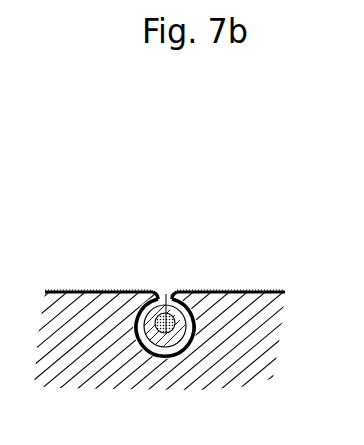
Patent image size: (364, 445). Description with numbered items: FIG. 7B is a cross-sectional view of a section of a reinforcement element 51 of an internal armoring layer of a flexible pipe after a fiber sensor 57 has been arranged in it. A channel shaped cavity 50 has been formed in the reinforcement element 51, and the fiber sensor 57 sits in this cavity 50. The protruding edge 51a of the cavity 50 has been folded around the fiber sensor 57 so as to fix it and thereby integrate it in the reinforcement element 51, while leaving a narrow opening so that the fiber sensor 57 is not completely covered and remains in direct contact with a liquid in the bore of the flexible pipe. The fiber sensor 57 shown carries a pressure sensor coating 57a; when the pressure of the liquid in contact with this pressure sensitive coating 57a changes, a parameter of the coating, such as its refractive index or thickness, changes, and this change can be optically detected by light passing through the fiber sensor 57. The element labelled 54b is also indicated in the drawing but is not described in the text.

The channel shaped cavity 50 is at (170, 288).
The reinforcement element 51 is at (283, 290).
The protruding edge 51a is at (156, 291).
The inner filling / sheath layer 54b is at (177, 292).
The fiber sensor 57 is at (175, 290).
The pressure sensor coating 57a is at (158, 291).